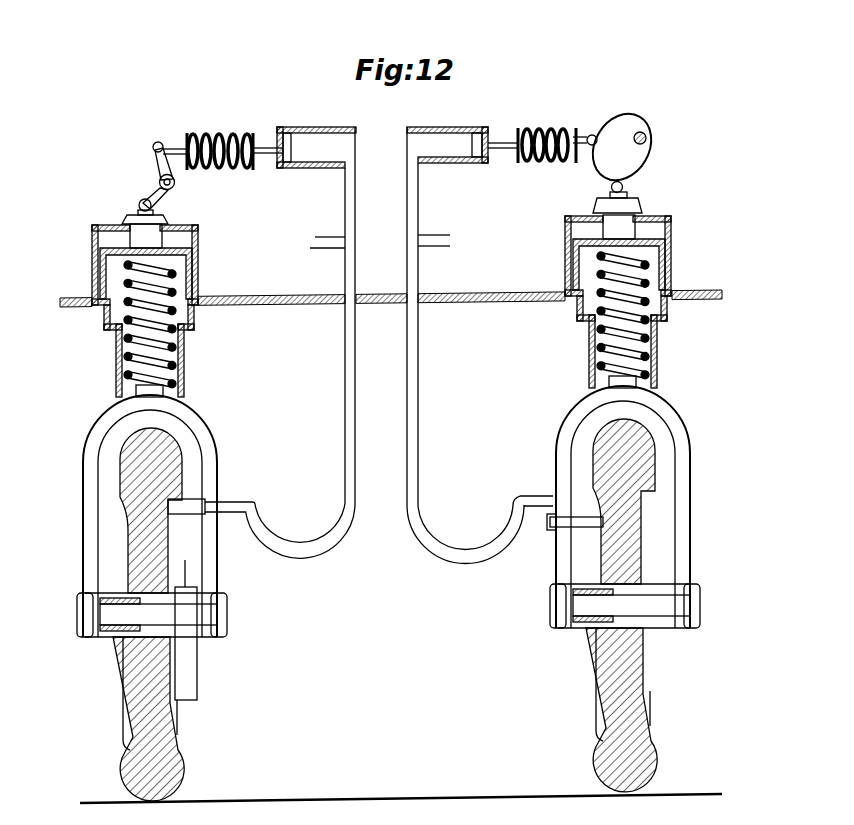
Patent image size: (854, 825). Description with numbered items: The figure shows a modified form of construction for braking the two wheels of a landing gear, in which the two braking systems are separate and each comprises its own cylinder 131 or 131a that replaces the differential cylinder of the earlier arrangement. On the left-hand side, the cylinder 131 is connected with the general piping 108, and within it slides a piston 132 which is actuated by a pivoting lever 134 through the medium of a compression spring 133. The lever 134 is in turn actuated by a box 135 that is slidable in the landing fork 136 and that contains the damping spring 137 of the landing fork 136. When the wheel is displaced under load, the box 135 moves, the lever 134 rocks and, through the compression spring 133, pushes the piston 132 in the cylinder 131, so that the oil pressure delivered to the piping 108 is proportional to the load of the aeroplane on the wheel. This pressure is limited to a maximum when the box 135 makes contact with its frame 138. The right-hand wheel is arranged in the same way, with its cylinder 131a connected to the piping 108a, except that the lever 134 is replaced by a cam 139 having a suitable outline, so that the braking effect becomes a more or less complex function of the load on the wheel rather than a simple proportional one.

The general piping 108 is at (348, 262).
The piping 108a is at (412, 257).
The cylinder 131 is at (310, 168).
The cylinder 131a is at (453, 167).
The piston 132 is at (276, 168).
The compression spring 133 is at (210, 170).
The pivoting lever 134 is at (162, 188).
The box 135 is at (185, 247).
The landing fork 136 is at (190, 423).
The damping spring 137 is at (182, 363).
The frame 138 is at (200, 277).
The cam 139 is at (625, 172).